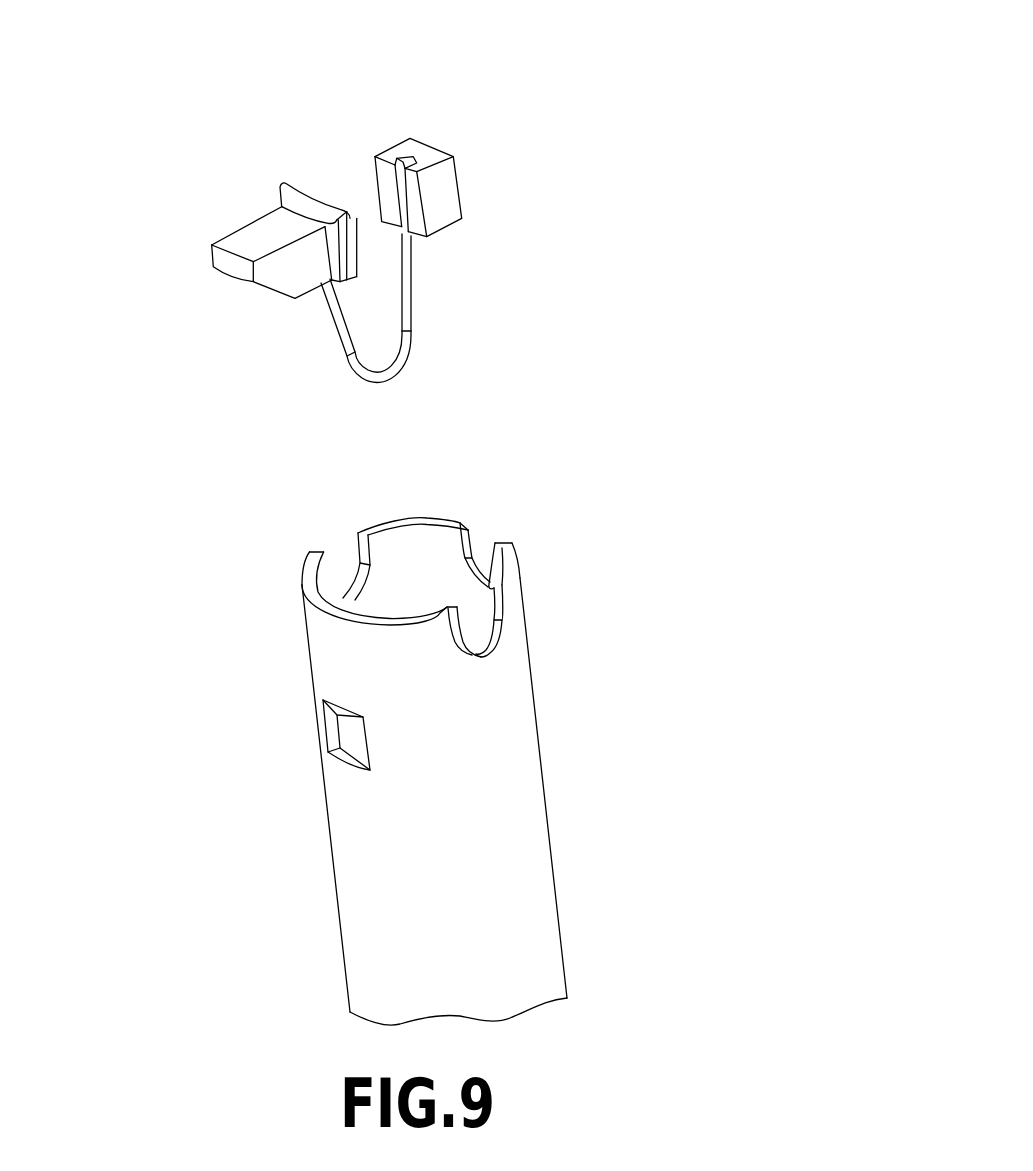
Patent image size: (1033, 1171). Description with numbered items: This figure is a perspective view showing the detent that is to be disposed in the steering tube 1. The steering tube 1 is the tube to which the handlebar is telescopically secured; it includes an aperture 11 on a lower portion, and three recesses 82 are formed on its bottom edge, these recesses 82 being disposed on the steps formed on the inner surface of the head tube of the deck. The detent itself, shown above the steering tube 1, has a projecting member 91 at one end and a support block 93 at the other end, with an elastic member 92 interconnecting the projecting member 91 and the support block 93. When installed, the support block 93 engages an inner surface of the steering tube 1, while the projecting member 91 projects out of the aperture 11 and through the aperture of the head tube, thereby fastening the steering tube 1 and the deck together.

The steering tube 1 is at (482, 877).
The aperture 11 is at (367, 745).
The recesses 82 is at (355, 572).
The projecting member 91 is at (267, 237).
The elastic member 92 is at (410, 310).
The support block 93 is at (427, 152).